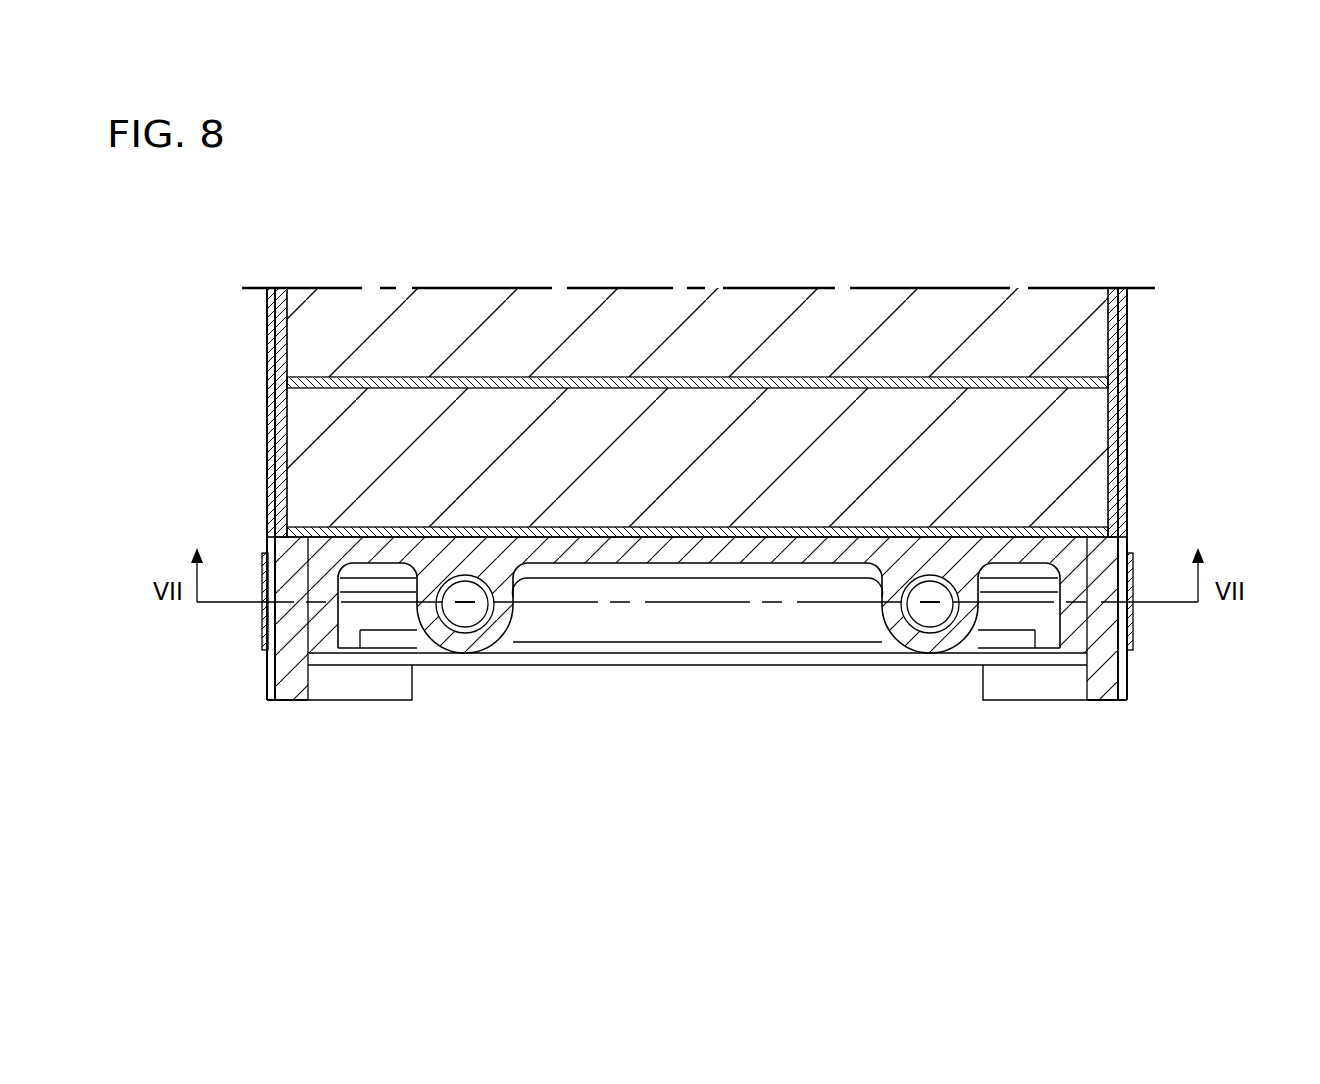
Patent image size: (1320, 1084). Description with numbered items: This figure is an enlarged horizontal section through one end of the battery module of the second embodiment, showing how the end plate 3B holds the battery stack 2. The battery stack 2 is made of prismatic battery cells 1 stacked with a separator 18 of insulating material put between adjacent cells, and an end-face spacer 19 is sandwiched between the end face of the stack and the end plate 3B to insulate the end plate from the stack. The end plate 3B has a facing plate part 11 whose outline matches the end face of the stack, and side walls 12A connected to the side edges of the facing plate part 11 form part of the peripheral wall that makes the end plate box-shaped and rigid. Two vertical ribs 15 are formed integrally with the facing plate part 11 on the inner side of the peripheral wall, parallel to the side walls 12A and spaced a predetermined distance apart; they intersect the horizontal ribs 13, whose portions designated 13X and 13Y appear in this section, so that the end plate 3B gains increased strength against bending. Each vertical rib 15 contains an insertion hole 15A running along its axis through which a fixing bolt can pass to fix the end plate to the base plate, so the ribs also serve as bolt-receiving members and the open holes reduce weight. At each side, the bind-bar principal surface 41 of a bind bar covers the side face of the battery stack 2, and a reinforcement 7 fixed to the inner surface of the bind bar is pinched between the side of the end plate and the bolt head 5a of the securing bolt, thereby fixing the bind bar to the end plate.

The prismatic battery cell 1 is at (537, 310).
The battery stack 2 is at (765, 164).
The separator 18 is at (597, 378).
The end-face spacer 19 is at (362, 530).
The bind-bar principal surface 41 is at (268, 390).
The bolt head 5a is at (262, 572).
The facing plate part 11 is at (765, 545).
The side wall 12A is at (322, 612).
The reinforcement 7 is at (292, 670).
The end plate 3B is at (352, 676).
The horizontal rib 13 is at (1062, 830).
The side recess 13X is at (378, 615).
The central recess 13Y is at (676, 615).
The vertical rib 15 is at (497, 628).
The insertion hole 15A is at (460, 630).